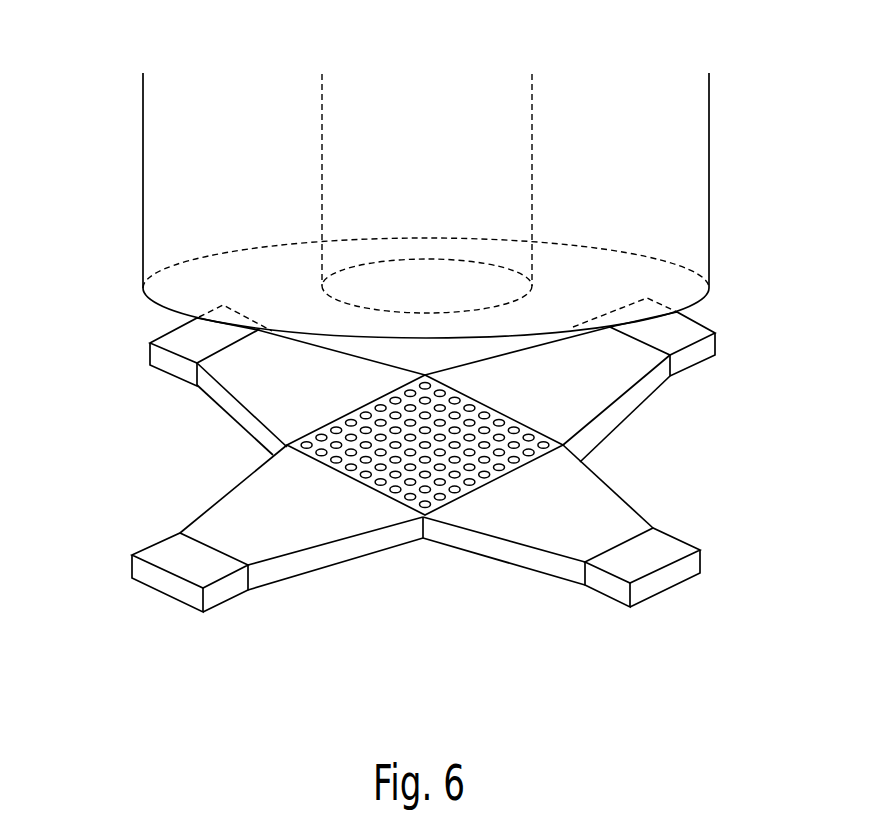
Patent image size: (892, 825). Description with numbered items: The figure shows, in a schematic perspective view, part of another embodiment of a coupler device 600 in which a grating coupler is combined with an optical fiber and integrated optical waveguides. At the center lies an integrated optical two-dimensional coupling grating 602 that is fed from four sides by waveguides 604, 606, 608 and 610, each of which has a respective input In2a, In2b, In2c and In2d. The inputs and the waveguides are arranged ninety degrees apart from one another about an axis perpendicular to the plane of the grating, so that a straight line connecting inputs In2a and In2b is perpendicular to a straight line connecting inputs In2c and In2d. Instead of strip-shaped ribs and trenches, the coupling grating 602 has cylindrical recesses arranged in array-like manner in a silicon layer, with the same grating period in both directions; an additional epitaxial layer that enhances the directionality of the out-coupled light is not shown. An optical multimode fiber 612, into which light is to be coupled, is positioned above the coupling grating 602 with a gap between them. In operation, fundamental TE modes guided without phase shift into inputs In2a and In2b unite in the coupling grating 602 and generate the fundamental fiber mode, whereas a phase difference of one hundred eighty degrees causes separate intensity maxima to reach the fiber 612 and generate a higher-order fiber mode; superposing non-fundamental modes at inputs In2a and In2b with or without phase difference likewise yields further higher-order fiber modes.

The coupler device 600 is at (130, 474).
The integrated optical two-dimensional coupling grating 602 is at (438, 487).
The waveguide 604 is at (327, 558).
The waveguide 606 is at (643, 372).
The waveguide 608 is at (246, 370).
The waveguide 610 is at (622, 508).
The optical multimode fiber 612 is at (710, 125).
The input In2a is at (163, 585).
The input In2b is at (700, 312).
The input In2c is at (166, 329).
The input In2d is at (670, 583).